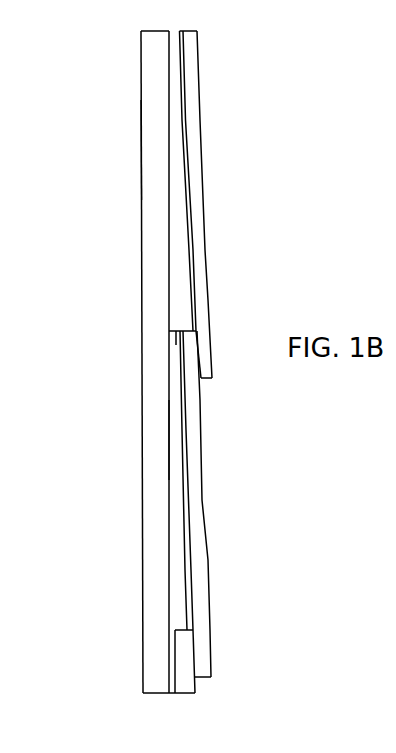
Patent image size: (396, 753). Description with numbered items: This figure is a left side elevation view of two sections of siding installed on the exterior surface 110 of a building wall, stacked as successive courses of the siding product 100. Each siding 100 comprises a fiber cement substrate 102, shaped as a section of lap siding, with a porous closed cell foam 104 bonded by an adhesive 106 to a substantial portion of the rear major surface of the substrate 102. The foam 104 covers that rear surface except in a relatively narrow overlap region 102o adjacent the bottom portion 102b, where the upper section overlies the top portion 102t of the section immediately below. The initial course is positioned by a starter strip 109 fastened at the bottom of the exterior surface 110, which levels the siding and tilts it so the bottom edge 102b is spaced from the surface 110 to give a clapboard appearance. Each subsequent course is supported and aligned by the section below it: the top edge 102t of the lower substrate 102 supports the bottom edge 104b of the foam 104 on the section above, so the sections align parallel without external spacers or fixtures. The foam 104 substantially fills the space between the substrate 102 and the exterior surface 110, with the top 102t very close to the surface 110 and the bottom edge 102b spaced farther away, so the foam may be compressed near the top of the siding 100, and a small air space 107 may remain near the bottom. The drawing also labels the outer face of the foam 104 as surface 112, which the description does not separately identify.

The fastening assembly 100 is at (274, 265).
The plate member 102 is at (204, 207).
The top of plate member 102t is at (187, 29).
The bottom of plate member 102b is at (207, 380).
The opening of plate member 102o is at (197, 355).
The base member 104 is at (169, 181).
The boss of base member 104b is at (181, 337).
The flexible arm 106 is at (185, 97).
The hook 107 is at (172, 308).
The bottom edge 109 is at (186, 696).
The gap 110 is at (176, 443).
The outer surface 112 is at (142, 135).